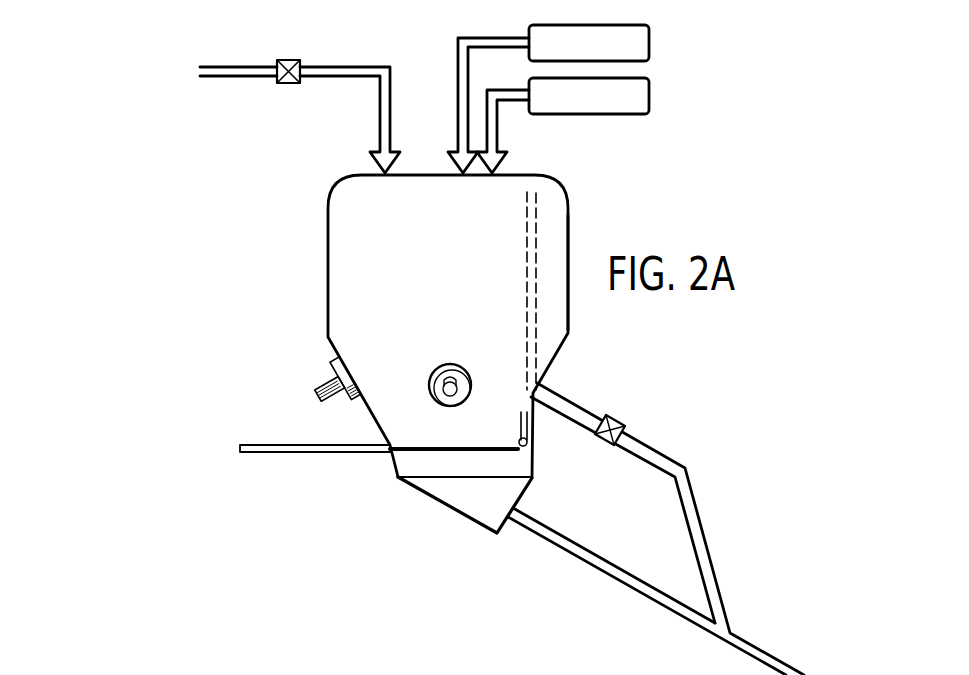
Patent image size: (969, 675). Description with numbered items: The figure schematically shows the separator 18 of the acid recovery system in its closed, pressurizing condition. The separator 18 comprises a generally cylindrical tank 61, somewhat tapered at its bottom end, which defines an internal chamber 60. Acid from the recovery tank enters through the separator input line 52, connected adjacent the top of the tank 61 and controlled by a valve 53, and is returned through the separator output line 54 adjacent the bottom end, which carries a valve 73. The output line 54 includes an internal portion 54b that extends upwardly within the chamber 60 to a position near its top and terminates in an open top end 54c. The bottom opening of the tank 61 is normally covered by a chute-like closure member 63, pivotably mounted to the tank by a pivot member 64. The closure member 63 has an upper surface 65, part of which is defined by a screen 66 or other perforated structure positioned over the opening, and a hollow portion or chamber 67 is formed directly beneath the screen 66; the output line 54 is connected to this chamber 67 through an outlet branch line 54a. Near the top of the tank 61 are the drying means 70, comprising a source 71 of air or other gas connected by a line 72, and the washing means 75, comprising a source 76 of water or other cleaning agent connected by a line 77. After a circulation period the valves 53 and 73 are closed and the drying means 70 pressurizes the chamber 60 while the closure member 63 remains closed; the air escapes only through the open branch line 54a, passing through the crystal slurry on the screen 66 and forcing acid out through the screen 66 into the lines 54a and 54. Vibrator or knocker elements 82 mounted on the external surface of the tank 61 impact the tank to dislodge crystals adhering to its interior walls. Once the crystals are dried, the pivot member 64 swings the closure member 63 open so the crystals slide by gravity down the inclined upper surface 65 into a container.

The separator 18 is at (724, 166).
The separator input line 52 is at (391, 101).
The valve 53 is at (289, 84).
The separator output line 54 is at (572, 408).
The outlet branch line 54a is at (630, 585).
The internal portion of output line 54b is at (530, 267).
The open top end 54c is at (527, 192).
The internal chamber 60 is at (329, 268).
The tank 61 is at (568, 243).
The closure member 63 is at (327, 459).
The pivot member 64 is at (536, 437).
The upper surface 65 is at (275, 444).
The screen 66 is at (434, 445).
The hollow portion or chamber 67 is at (463, 505).
The drying means 70 is at (680, 63).
The source of air 71 is at (641, 42).
The line 72 is at (481, 44).
The valve 73 is at (618, 418).
The washing means 75 is at (563, 145).
The source of water 76 is at (645, 101).
The line 77 is at (494, 95).
The vibrator or knocker elements 82 is at (318, 382).